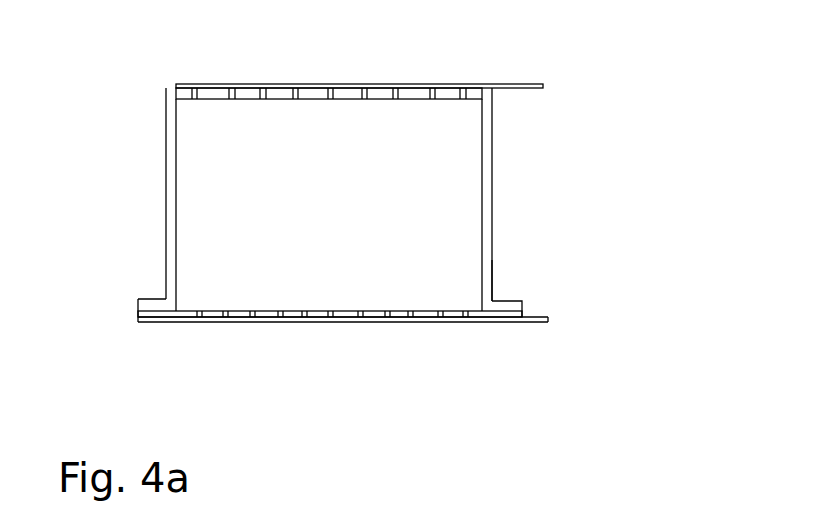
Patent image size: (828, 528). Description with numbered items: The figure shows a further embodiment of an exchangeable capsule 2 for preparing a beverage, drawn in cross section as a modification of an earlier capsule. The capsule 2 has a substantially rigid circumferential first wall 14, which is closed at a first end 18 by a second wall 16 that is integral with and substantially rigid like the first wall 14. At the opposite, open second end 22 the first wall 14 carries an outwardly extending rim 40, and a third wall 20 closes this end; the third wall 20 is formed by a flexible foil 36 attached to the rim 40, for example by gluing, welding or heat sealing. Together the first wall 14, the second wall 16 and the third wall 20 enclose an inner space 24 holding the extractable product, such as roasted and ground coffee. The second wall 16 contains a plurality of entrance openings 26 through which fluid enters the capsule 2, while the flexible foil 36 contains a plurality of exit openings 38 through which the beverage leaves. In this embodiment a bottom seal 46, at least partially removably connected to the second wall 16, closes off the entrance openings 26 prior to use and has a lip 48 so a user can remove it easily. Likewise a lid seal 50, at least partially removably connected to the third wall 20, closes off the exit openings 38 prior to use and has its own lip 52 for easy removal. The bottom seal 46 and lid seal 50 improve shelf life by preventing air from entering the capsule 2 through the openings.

The capsule 2 is at (642, 269).
The circumferential first wall 14 is at (487, 212).
The second wall 16 is at (447, 99).
The first end 18 is at (490, 117).
The third wall 20 is at (330, 289).
The second end 22 is at (487, 294).
The inner space 24 is at (210, 216).
The entrance openings 26 is at (258, 104).
The flexible foil 36 is at (426, 311).
The exit openings 38 is at (246, 302).
The outwardly extending rim 40 is at (519, 305).
The bottom seal 46 is at (452, 86).
The lip 48 is at (531, 85).
The lid seal 50 is at (418, 323).
The lip 52 is at (537, 325).